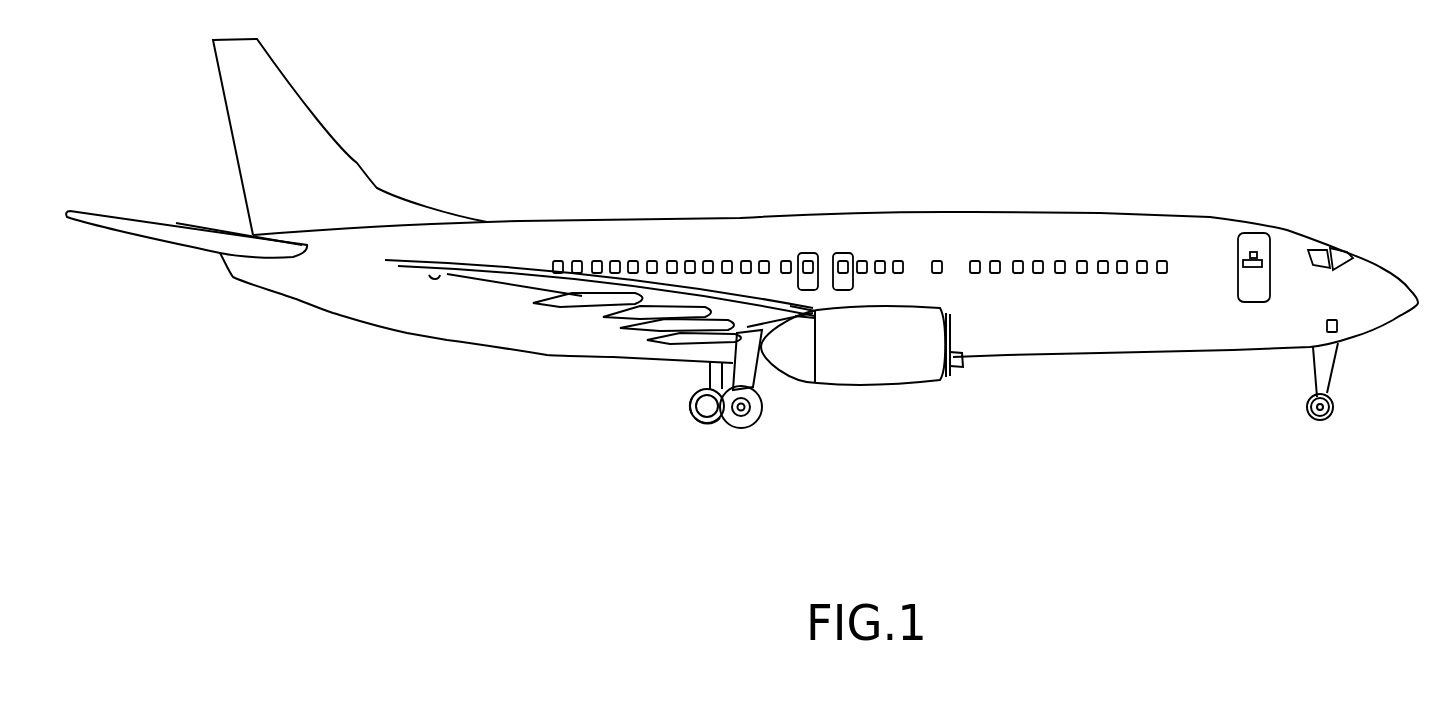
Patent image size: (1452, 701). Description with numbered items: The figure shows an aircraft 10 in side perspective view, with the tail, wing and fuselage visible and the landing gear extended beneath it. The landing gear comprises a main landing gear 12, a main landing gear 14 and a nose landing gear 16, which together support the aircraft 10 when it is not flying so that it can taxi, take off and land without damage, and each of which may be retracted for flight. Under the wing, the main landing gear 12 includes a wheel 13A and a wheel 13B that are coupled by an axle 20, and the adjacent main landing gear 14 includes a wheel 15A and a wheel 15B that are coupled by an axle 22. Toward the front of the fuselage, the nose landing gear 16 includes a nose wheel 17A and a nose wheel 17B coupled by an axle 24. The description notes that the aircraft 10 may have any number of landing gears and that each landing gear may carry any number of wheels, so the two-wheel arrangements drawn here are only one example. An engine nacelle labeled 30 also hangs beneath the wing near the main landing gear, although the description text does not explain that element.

The aircraft 10 is at (742, 201).
The main landing gear 12 is at (686, 377).
The wheel 13A is at (693, 392).
The wheel 13B is at (695, 417).
The main landing gear 14 is at (781, 428).
The wheel 15A is at (760, 403).
The wheel 15B is at (713, 430).
The nose landing gear 16 is at (1364, 384).
The nose wheel 17A is at (1306, 407).
The nose wheel 17B is at (1333, 407).
The axle 20 is at (692, 410).
The axle 22 is at (743, 410).
The axle 24 is at (1328, 417).
The engine 30 is at (800, 305).